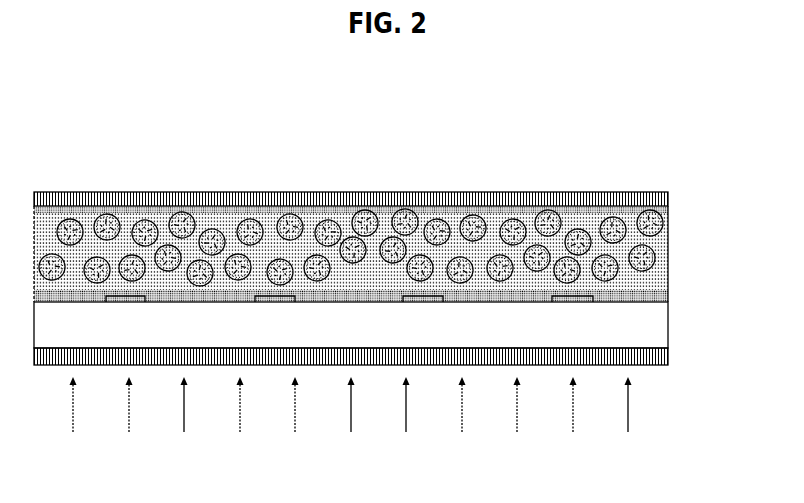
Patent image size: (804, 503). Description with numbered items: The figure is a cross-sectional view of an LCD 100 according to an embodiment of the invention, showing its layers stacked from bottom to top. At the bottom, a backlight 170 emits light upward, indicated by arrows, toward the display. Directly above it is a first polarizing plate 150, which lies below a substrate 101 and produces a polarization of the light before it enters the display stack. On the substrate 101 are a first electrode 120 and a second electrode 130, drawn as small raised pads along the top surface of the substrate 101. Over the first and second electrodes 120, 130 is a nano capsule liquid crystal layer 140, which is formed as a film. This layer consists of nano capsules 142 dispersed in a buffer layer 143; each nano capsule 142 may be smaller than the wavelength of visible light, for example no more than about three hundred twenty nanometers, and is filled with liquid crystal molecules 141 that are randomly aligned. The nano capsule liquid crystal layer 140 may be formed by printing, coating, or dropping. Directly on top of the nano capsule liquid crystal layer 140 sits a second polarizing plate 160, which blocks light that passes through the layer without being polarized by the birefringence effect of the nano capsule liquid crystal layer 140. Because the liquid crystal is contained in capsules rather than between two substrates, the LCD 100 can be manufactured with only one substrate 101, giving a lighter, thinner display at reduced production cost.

The LCD 100 is at (653, 154).
The substrate 101 is at (658, 338).
The first electrode 120 is at (125, 302).
The second electrode 130 is at (275, 302).
The nano capsule liquid crystal layer 140 is at (391, 253).
The liquid crystal molecules 141 is at (668, 216).
The nano capsules 142 is at (668, 232).
The buffer layer 143 is at (668, 248).
The first polarizing plate 150 is at (668, 356).
The second polarizing plate 160 is at (668, 197).
The backlight 170 is at (351, 416).